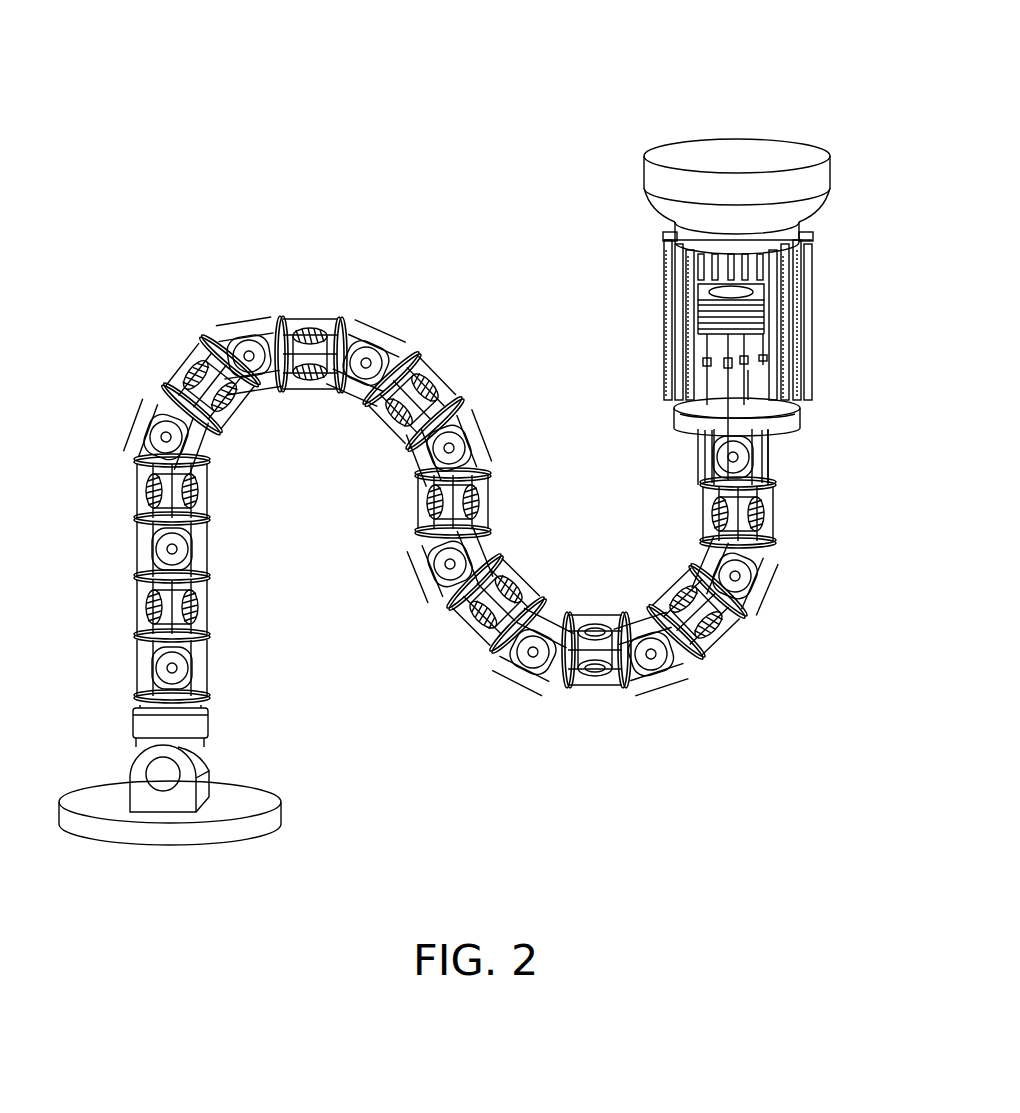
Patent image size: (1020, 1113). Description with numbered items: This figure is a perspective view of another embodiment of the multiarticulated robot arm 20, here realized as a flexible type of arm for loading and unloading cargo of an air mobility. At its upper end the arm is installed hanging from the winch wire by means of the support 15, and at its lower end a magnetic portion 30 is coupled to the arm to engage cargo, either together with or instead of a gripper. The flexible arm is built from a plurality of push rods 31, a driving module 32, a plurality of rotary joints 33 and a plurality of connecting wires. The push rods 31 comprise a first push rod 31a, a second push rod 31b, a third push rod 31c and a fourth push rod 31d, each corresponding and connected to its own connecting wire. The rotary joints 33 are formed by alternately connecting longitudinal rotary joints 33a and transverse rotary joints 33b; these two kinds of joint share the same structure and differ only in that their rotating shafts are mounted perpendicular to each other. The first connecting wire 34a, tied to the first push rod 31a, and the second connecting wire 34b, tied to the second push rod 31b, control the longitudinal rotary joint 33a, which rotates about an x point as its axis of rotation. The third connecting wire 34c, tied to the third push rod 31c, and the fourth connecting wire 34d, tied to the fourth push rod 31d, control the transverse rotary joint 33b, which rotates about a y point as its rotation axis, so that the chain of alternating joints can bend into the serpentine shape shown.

The multiarticulated robot arm 20 is at (508, 56).
The support 15 is at (737, 152).
The magnetic portion 30 is at (231, 836).
The push rods 31 is at (702, 346).
The first push rod 31a is at (707, 353).
The second push rod 31b is at (765, 344).
The third push rod 31c is at (728, 366).
The fourth push rod 31d is at (748, 350).
The driving module 32 is at (712, 297).
The rotary joints 33 is at (595, 793).
The longitudinal rotary joint 33a is at (536, 668).
The transverse rotary joint 33b is at (604, 686).
The first connecting wire 34a is at (712, 408).
The second connecting wire 34b is at (770, 458).
The third connecting wire 34c is at (740, 423).
The fourth connecting wire 34d is at (748, 378).